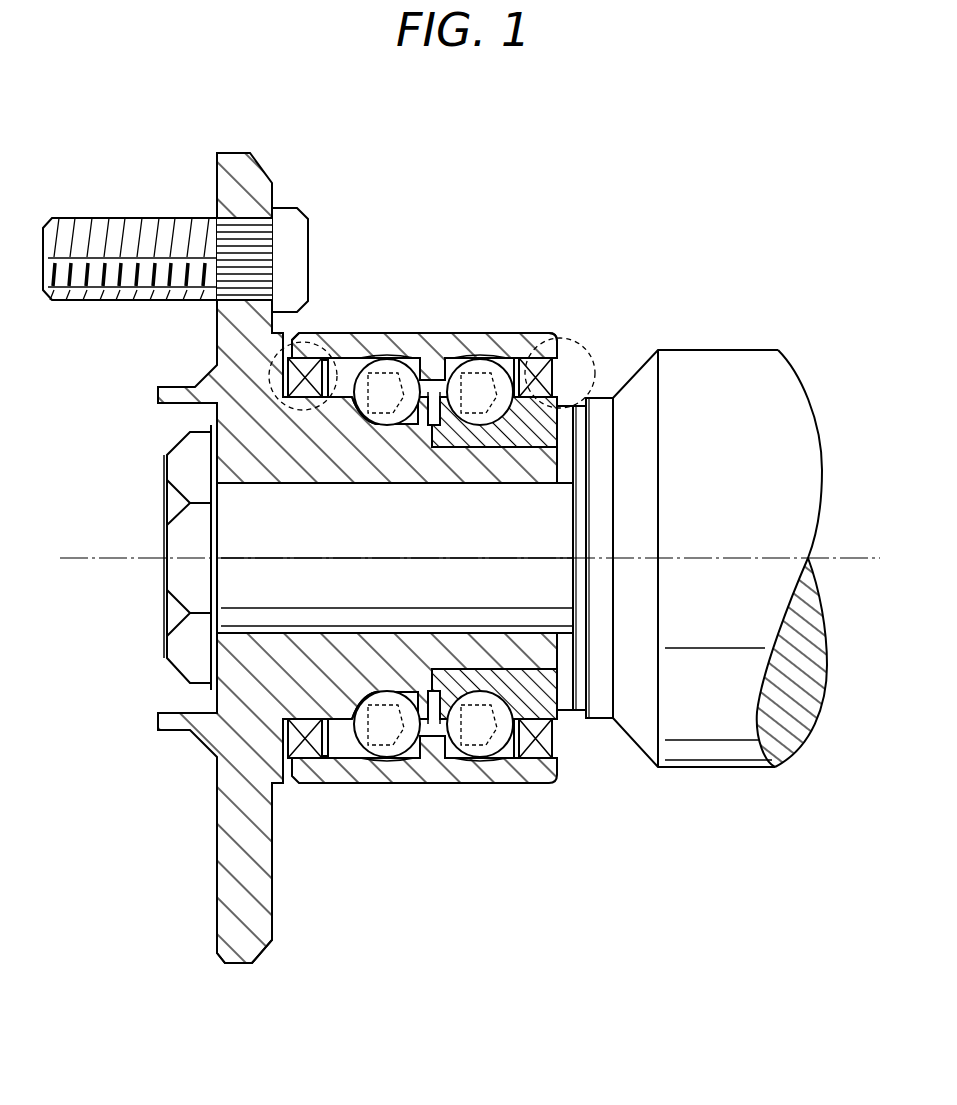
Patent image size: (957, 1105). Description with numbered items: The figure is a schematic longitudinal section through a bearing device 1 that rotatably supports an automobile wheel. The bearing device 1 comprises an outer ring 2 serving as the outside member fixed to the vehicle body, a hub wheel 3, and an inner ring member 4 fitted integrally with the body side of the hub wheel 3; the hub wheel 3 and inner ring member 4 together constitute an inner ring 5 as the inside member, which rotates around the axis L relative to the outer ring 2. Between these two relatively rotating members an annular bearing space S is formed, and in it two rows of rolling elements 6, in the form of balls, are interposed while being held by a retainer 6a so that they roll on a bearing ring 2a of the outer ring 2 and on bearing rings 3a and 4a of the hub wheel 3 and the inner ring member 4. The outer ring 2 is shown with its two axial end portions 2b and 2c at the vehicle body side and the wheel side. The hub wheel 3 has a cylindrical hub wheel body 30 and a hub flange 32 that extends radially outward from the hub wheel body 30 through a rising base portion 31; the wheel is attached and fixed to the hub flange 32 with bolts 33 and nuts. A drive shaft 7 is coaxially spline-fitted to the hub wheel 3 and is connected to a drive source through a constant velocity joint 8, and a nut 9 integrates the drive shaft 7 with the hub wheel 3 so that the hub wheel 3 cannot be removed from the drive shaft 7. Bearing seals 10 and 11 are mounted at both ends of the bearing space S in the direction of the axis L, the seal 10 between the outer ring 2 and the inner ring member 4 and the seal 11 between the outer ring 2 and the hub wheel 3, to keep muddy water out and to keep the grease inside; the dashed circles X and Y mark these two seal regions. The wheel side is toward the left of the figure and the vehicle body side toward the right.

The bearing device 1 is at (533, 147).
The outer ring 2 is at (424, 517).
The bearing ring 2a is at (385, 353).
The outer ring end portion (inboard) 2b is at (513, 353).
The outer ring end portion (outboard) 2c is at (348, 357).
The hub wheel 3 is at (333, 567).
The bearing ring 3a is at (365, 723).
The inner ring member 4 is at (475, 588).
The bearing ring 4a is at (501, 725).
The inner ring 5 is at (102, 426).
The rolling elements 6 is at (433, 561).
The retainer 6a is at (383, 357).
The drive shaft 7 is at (303, 598).
The constant velocity joint 8 is at (740, 748).
The nut 9 is at (180, 578).
The bearing seal 10 is at (540, 353).
The bearing seal 11 is at (319, 350).
The hub wheel body 30 is at (325, 725).
The rising base portion 31 is at (283, 717).
The hub flange 32 is at (233, 938).
The bolts 33 is at (283, 228).
The bearing space S is at (433, 735).
The inboard seal region X is at (584, 338).
The outboard seal region Y is at (333, 353).
The axis L is at (848, 553).